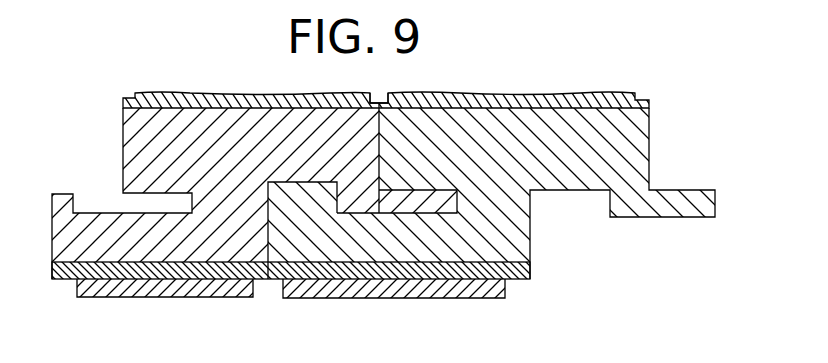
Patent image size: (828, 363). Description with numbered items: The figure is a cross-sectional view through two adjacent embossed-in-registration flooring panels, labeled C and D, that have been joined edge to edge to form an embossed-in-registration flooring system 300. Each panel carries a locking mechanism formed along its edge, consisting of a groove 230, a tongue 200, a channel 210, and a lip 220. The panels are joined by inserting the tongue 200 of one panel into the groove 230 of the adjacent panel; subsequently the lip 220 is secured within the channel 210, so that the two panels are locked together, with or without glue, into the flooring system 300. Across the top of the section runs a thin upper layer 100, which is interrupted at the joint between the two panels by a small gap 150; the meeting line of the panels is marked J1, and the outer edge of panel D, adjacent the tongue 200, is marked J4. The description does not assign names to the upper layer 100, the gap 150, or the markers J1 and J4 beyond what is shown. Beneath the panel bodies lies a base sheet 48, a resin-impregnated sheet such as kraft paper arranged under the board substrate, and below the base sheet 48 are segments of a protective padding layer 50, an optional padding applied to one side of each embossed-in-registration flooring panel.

The embossed-in-registration flooring system 300 is at (115, 92).
The top conductive layer 100 is at (250, 92).
The separation gap 150 is at (386, 92).
The first joint J1 is at (381, 118).
The fourth joint J4 is at (650, 142).
The tongue 200 is at (645, 207).
The channel 210 is at (575, 192).
The lip 220 is at (318, 188).
The groove 230 is at (423, 217).
The base sheet 48 is at (532, 274).
The protective padding layer 50 is at (504, 292).